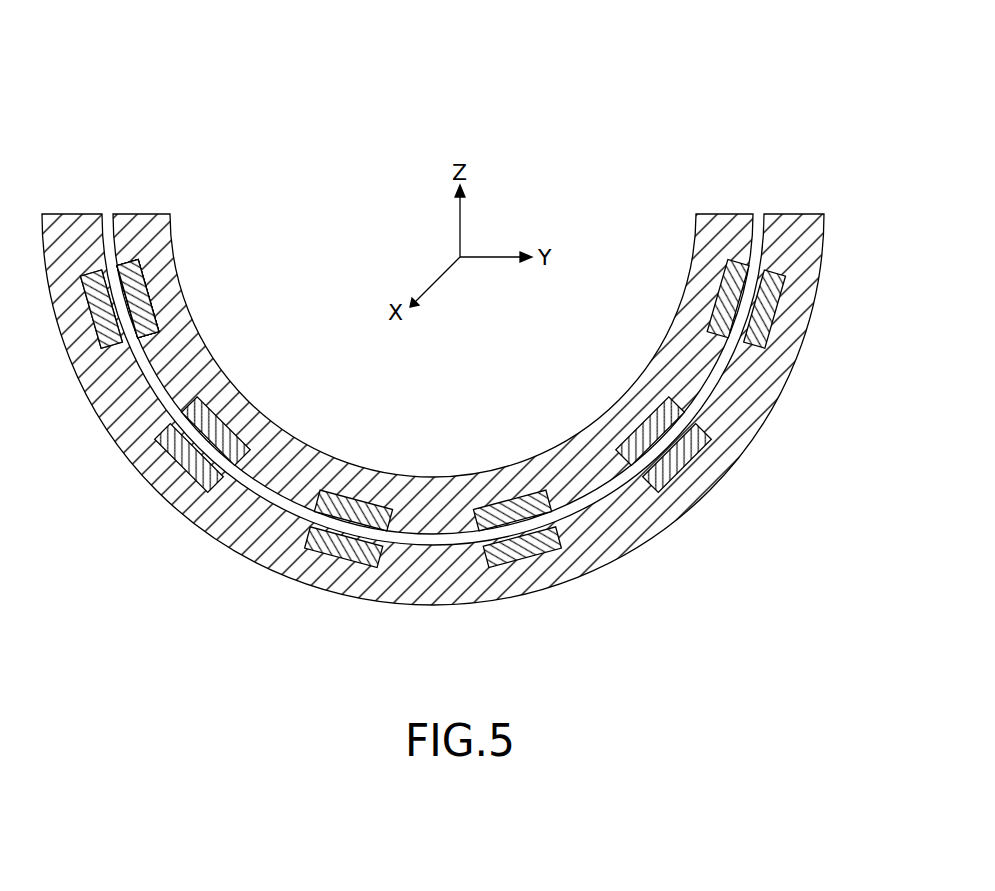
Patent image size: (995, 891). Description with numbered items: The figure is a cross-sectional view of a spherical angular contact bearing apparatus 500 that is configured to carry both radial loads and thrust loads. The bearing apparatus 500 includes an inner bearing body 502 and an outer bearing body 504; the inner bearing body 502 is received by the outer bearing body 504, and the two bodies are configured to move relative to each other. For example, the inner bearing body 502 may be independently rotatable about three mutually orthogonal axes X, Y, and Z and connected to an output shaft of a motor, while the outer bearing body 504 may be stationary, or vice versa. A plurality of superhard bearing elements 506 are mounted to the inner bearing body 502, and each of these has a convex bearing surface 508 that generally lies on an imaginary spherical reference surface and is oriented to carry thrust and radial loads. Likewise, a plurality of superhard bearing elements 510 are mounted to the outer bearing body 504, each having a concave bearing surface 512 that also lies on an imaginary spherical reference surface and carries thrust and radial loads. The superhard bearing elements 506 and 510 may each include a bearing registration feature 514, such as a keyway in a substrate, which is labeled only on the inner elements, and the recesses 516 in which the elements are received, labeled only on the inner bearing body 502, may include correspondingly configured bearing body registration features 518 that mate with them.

The spherical angular contact bearing apparatus 500 is at (438, 331).
The inner bearing body 502 is at (712, 228).
The outer bearing body 504 is at (780, 222).
The superhard bearing elements 506 is at (118, 267).
The convex bearing surface 508 is at (117, 272).
The superhard bearing elements 510 is at (107, 310).
The concave bearing surface 512 is at (120, 335).
The bearing registration feature 514 is at (140, 330).
The recesses 516 is at (120, 258).
The bearing body registration features 518 is at (138, 299).